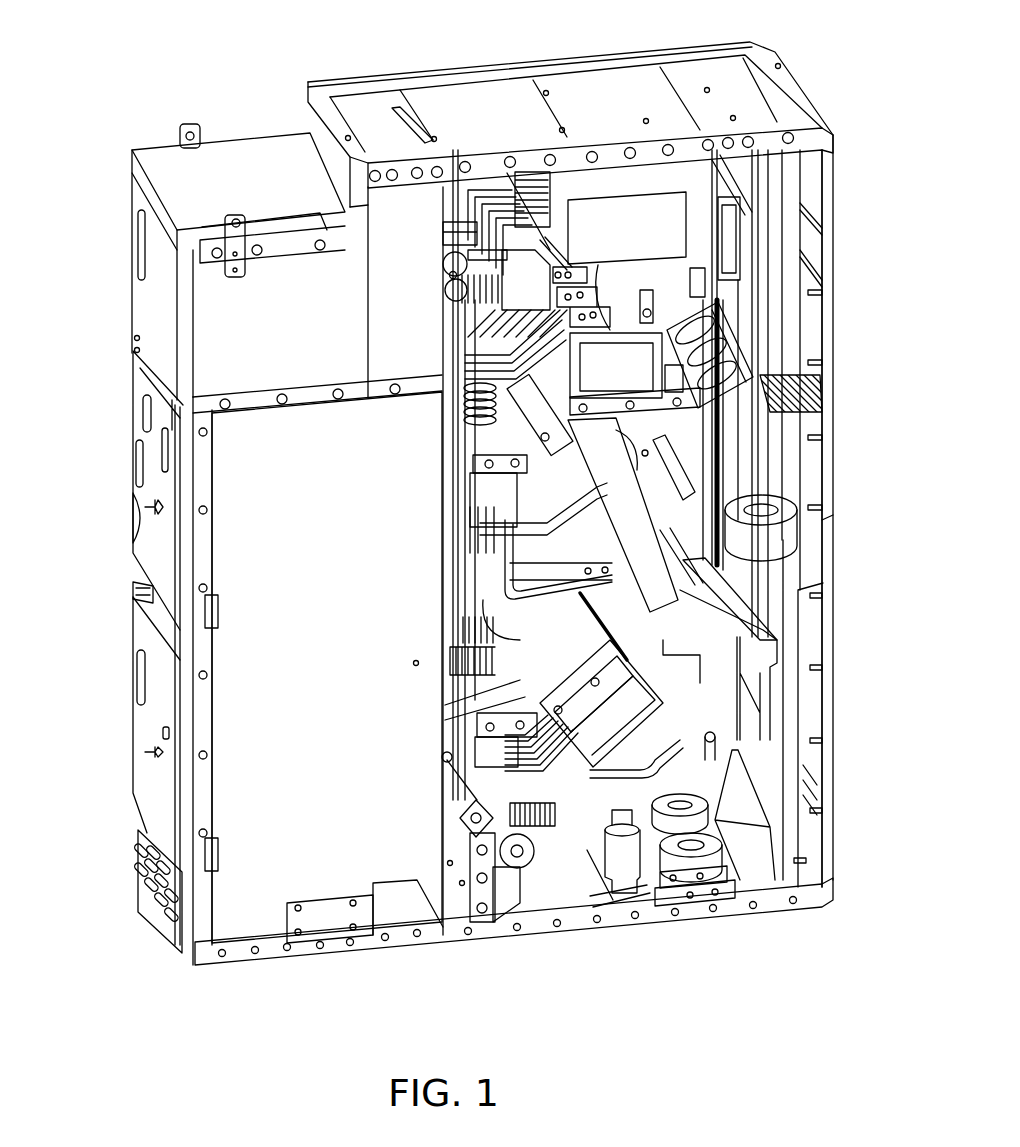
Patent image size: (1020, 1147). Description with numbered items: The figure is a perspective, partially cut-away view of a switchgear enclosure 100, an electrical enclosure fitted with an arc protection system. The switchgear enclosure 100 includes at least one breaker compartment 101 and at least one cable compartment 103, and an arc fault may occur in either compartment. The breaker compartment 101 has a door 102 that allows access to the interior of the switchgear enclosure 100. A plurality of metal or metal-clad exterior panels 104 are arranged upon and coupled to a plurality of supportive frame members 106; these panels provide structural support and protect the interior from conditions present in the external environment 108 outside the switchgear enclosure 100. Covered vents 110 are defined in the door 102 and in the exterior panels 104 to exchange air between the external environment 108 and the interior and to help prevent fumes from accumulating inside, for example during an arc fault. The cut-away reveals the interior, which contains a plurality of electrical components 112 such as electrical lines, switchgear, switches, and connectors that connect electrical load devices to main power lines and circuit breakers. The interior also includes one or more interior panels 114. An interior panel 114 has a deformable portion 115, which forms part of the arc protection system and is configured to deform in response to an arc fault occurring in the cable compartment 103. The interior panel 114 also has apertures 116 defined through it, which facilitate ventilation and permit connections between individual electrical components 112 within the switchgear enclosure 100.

The switchgear enclosure 100 is at (140, 60).
The breaker compartment 101 is at (357, 873).
The door 102 is at (153, 553).
The cable compartment 103 is at (659, 948).
The exterior panels 104 is at (277, 187).
The supportive frame members 106 is at (805, 137).
The external environment 108 is at (379, 57).
The covered vents 110 is at (133, 877).
The electrical components 112 is at (705, 775).
The interior panel 114 is at (778, 352).
The deformable portion 115 is at (564, 685).
The apertures 116 is at (747, 310).